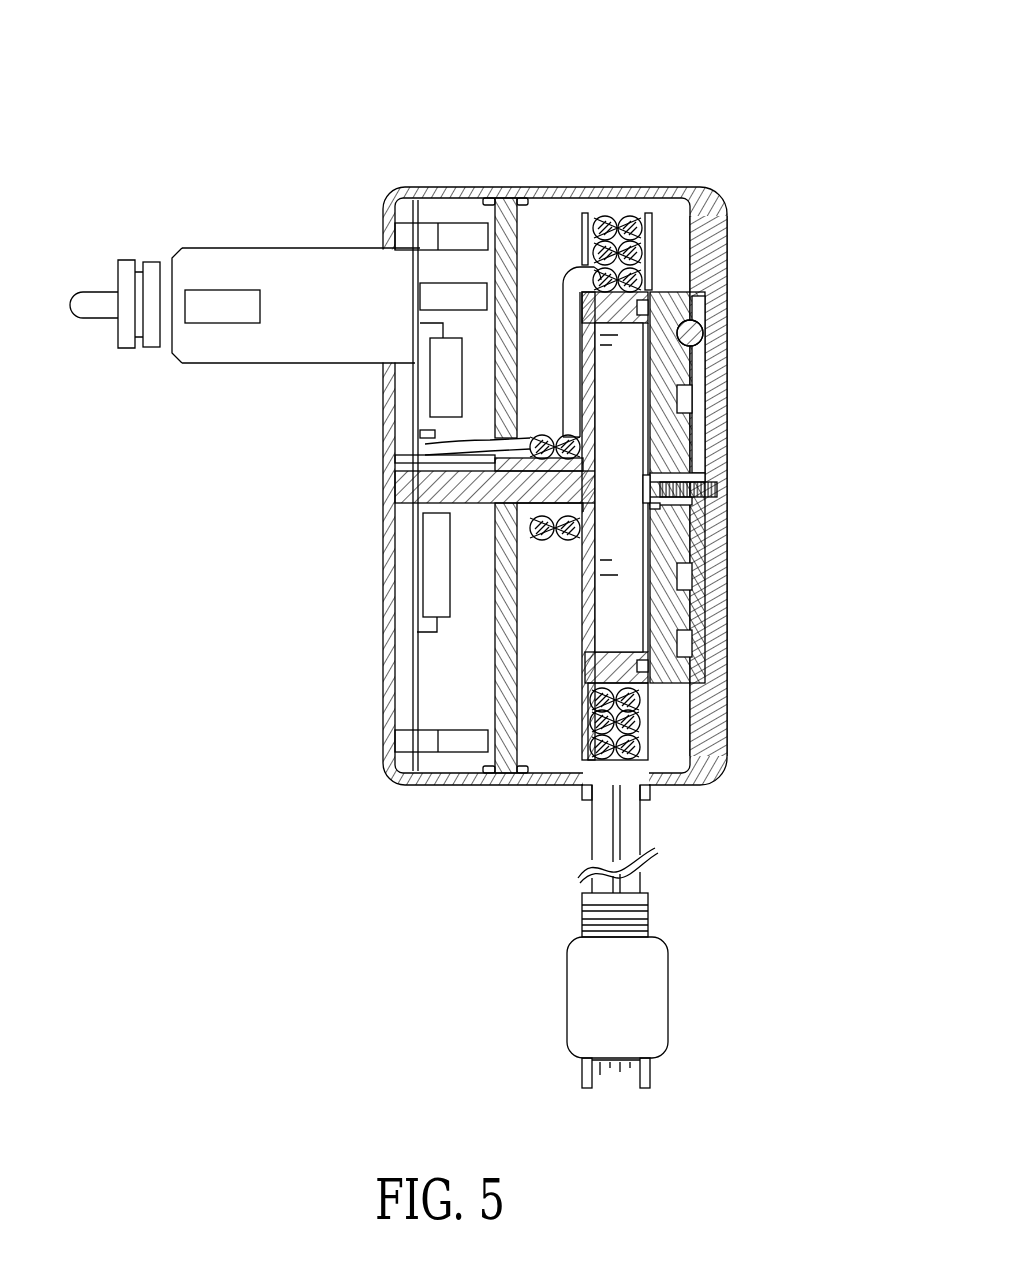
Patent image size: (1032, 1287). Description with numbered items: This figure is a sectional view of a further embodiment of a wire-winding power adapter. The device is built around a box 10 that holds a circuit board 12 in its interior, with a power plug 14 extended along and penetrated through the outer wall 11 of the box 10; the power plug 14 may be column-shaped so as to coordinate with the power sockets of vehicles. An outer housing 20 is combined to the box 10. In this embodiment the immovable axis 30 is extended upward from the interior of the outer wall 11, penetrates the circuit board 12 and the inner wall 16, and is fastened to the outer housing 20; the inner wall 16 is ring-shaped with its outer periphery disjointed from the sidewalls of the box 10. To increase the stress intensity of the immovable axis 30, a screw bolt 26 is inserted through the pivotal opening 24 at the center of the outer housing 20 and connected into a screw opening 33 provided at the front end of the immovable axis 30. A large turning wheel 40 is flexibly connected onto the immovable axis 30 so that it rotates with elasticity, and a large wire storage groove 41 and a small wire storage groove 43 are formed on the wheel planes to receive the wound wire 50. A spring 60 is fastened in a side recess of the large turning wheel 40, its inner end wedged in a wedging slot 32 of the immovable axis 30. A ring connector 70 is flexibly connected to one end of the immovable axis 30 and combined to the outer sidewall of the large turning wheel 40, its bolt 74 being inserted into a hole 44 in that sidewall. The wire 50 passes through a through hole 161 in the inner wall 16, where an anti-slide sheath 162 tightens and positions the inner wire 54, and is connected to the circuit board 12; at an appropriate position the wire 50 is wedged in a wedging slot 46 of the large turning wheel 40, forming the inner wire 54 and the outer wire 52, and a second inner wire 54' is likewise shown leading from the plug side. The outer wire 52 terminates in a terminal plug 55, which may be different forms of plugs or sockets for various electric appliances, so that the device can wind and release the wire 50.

The box 10 is at (388, 186).
The outer wall 11 is at (383, 448).
The circuit board 12 is at (413, 685).
The power plug 14 is at (232, 272).
The inner wall 16 is at (520, 735).
The outer housing 20 is at (718, 278).
The pivotal opening 24 is at (706, 488).
The screw bolt 26 is at (715, 487).
The immovable axis 30 is at (493, 483).
The wedging slot 32 is at (653, 474).
The screw opening 33 is at (688, 500).
The large turning wheel 40 is at (633, 212).
The large wire storage groove 41 is at (597, 213).
The small wire storage groove 43 is at (548, 558).
The hole 44 is at (653, 230).
The wedging slot 46 is at (579, 265).
The wire 50 is at (632, 212).
The outer wire 52 is at (653, 282).
The inner wire 54 is at (537, 735).
The wire 54' is at (375, 435).
The terminal plug 55 is at (622, 998).
The spring 60 is at (620, 560).
The ring connector 70 is at (665, 372).
The bolt 74 is at (695, 322).
The through hole 161 is at (493, 432).
The anti-slide sheath 162 is at (488, 476).